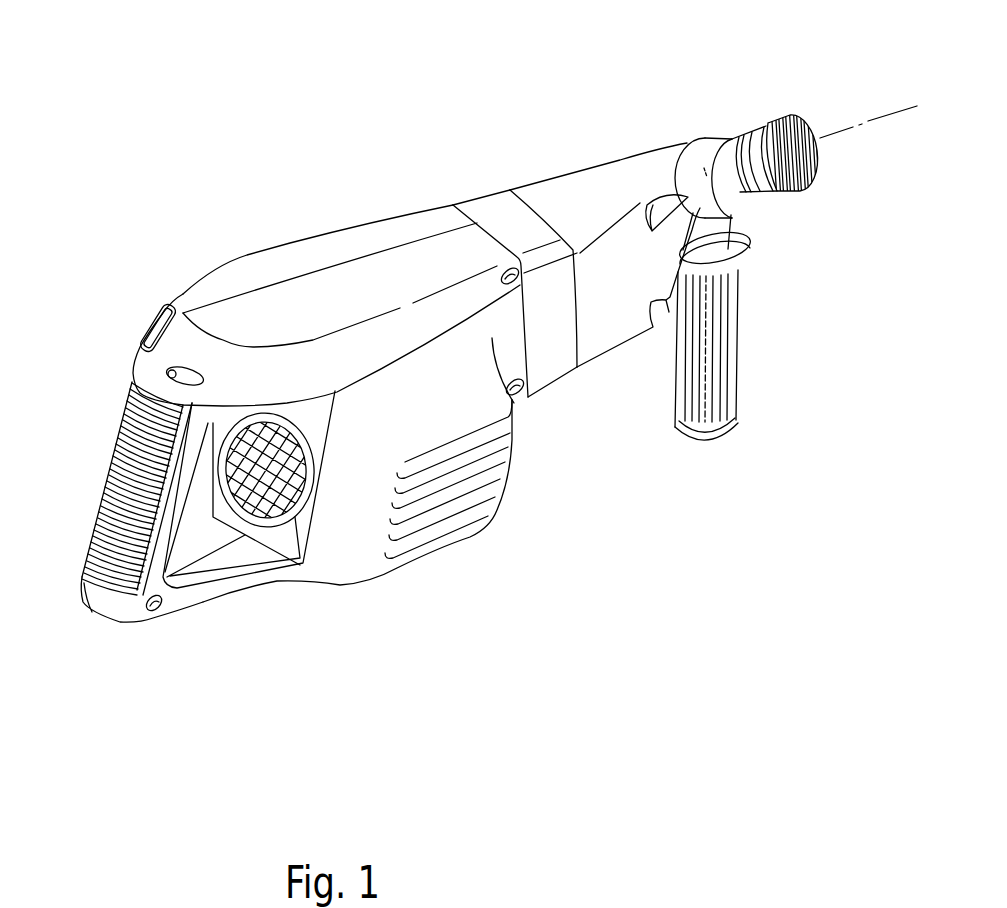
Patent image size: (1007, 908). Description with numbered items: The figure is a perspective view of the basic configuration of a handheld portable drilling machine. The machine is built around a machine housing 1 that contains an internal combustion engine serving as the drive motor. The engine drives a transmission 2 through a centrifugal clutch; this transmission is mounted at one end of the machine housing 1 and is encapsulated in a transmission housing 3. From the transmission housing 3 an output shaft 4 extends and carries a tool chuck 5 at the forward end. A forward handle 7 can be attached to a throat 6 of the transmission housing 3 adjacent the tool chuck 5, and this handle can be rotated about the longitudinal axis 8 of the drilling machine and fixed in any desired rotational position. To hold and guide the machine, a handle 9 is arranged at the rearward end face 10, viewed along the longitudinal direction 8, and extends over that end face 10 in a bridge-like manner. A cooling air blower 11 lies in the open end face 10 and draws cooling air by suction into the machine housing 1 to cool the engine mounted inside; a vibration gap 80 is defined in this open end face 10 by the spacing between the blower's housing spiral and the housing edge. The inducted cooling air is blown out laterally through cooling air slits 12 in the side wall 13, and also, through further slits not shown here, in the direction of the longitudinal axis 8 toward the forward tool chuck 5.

The machine housing 1 is at (332, 240).
The transmission 2 is at (553, 150).
The transmission housing 3 is at (607, 342).
The output shaft 4 is at (718, 158).
The tool chuck 5 is at (746, 106).
The throat 6 is at (684, 156).
The forward handle 7 is at (738, 373).
The longitudinal axis 8 is at (893, 110).
The handle 9 is at (118, 429).
The rearward end face 10 is at (246, 553).
The cooling air blower 11 is at (303, 563).
The cooling air slits 12 is at (455, 497).
The side wall 13 is at (465, 422).
The vibration gap 80 is at (310, 485).